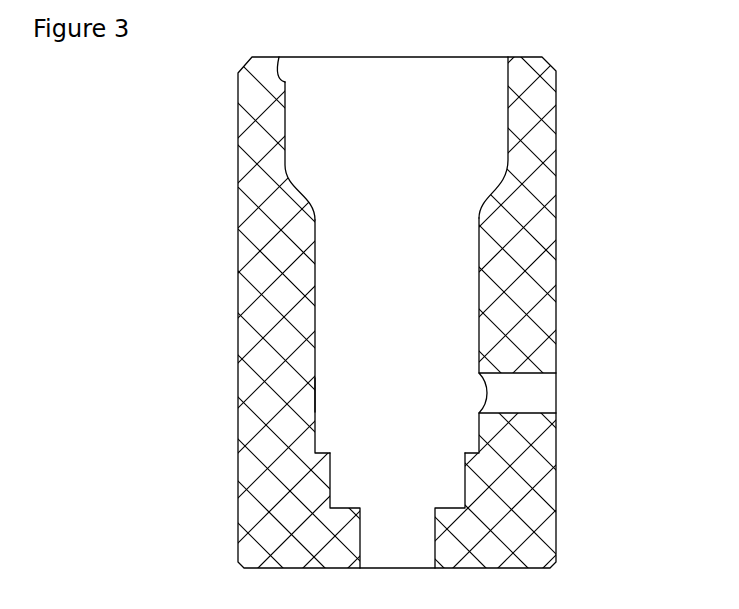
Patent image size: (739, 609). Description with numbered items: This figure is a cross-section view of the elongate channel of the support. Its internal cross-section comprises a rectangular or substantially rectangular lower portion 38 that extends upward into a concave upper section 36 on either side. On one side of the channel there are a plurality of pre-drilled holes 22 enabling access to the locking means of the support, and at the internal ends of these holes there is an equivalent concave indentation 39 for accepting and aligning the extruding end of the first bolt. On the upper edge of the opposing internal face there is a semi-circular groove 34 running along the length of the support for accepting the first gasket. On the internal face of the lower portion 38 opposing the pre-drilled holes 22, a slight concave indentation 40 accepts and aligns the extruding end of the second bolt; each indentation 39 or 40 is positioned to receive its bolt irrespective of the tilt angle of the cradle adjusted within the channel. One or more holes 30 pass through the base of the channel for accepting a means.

The pre-drilled holes 22 is at (522, 400).
The holes 30 is at (395, 482).
The semi-circular groove 34 is at (294, 67).
The concave upper section 36 is at (297, 132).
The substantially rectangular lower portion 38 is at (371, 439).
The concave indentation 39 is at (500, 392).
The slight concave indentation 40 is at (302, 398).